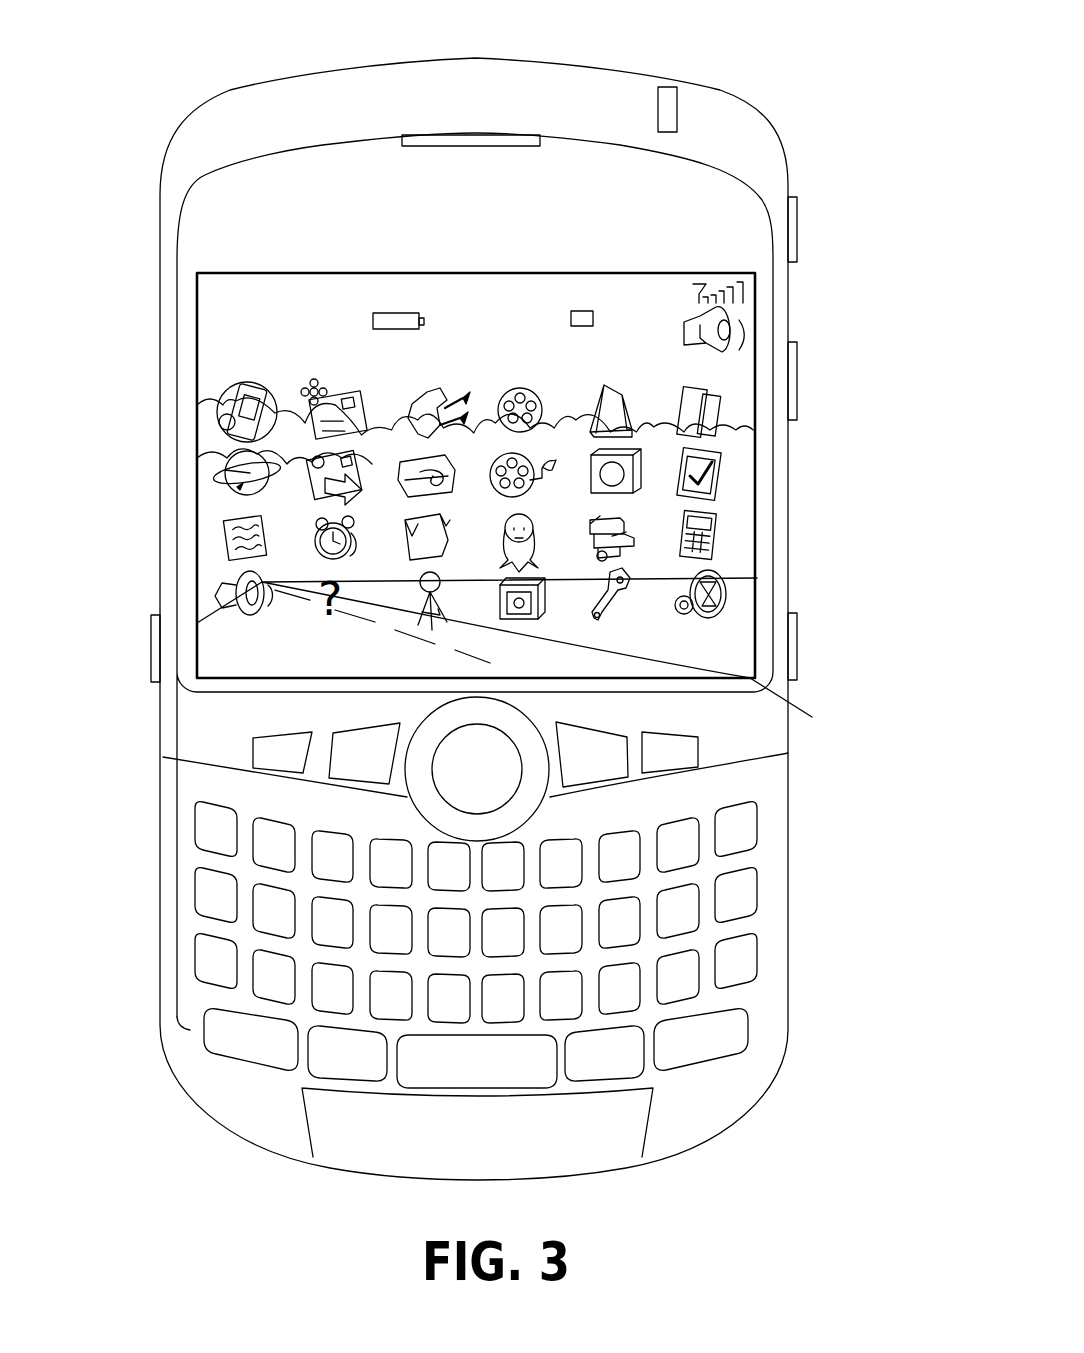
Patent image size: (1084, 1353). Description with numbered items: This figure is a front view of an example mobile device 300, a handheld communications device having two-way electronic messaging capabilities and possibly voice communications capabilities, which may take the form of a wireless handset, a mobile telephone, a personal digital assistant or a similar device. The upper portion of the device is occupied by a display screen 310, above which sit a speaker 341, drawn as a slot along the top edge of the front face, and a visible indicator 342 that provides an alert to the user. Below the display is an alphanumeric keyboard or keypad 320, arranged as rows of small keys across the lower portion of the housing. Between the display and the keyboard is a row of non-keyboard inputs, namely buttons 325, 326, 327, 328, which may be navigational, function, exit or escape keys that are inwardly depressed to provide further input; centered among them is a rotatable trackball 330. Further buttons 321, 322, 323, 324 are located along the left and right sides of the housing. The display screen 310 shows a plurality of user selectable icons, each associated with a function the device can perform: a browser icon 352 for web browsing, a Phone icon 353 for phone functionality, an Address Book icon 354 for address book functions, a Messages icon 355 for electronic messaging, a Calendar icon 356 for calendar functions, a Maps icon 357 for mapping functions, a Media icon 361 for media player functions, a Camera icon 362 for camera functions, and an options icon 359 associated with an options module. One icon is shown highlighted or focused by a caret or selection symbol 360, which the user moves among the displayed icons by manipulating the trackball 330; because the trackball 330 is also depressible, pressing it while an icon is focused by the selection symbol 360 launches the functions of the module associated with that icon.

The mobile device 300 is at (832, 414).
The display screen 310 is at (197, 378).
The alphanumeric keyboard 320 is at (177, 913).
The button 321 is at (151, 648).
The button 322 is at (798, 230).
The button 323 is at (798, 370).
The button 324 is at (798, 662).
The button 325 is at (253, 751).
The button 326 is at (334, 731).
The button 327 is at (603, 743).
The button 328 is at (683, 732).
The trackball 330 is at (507, 737).
The speaker 341 is at (402, 137).
The visible indicator 342 is at (658, 108).
The browser icon 352 is at (225, 468).
The Phone icon 353 is at (433, 392).
The Address Book icon 354 is at (713, 405).
The Messages icon 355 is at (332, 380).
The Calendar icon 356 is at (595, 400).
The Maps icon 357 is at (410, 462).
The options icon 359 is at (620, 600).
The selection symbol 360 is at (238, 378).
The Media icon 361 is at (523, 497).
The Camera icon 362 is at (641, 488).